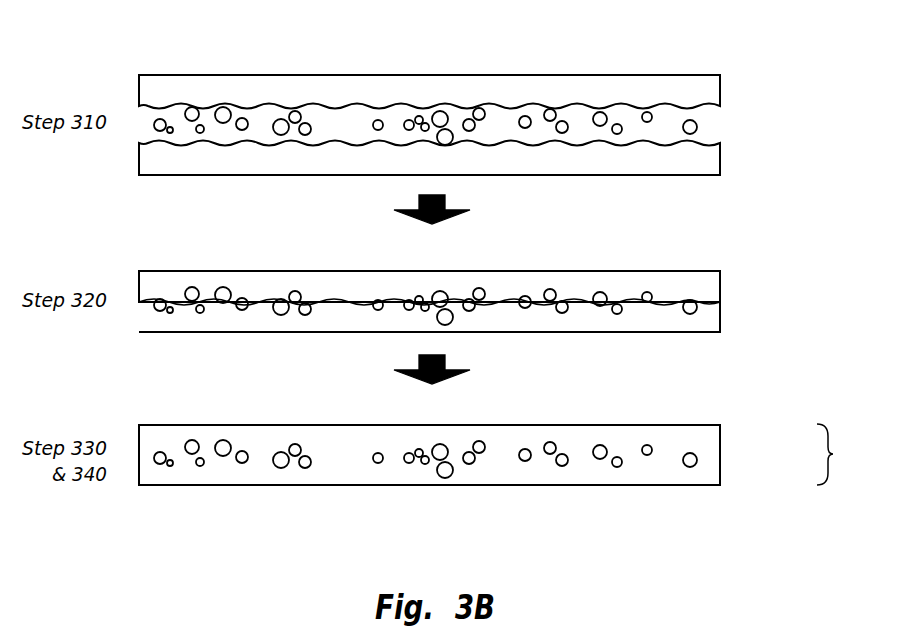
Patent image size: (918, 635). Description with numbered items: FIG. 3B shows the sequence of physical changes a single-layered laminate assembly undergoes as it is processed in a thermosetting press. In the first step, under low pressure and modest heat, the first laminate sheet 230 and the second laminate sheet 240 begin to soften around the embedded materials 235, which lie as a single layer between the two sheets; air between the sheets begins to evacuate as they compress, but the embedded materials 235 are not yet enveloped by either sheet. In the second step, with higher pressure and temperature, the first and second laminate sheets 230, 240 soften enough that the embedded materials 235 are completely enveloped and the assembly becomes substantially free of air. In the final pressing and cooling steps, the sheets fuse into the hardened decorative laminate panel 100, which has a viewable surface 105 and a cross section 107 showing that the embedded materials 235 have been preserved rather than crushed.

The second laminate sheet 240 is at (710, 88).
The first laminate sheet 230 is at (712, 157).
The embedded materials 235 is at (425, 252).
The viewable surface 105 is at (663, 422).
The cross section 107 is at (705, 445).
The decorative laminate panel 100 is at (845, 454).